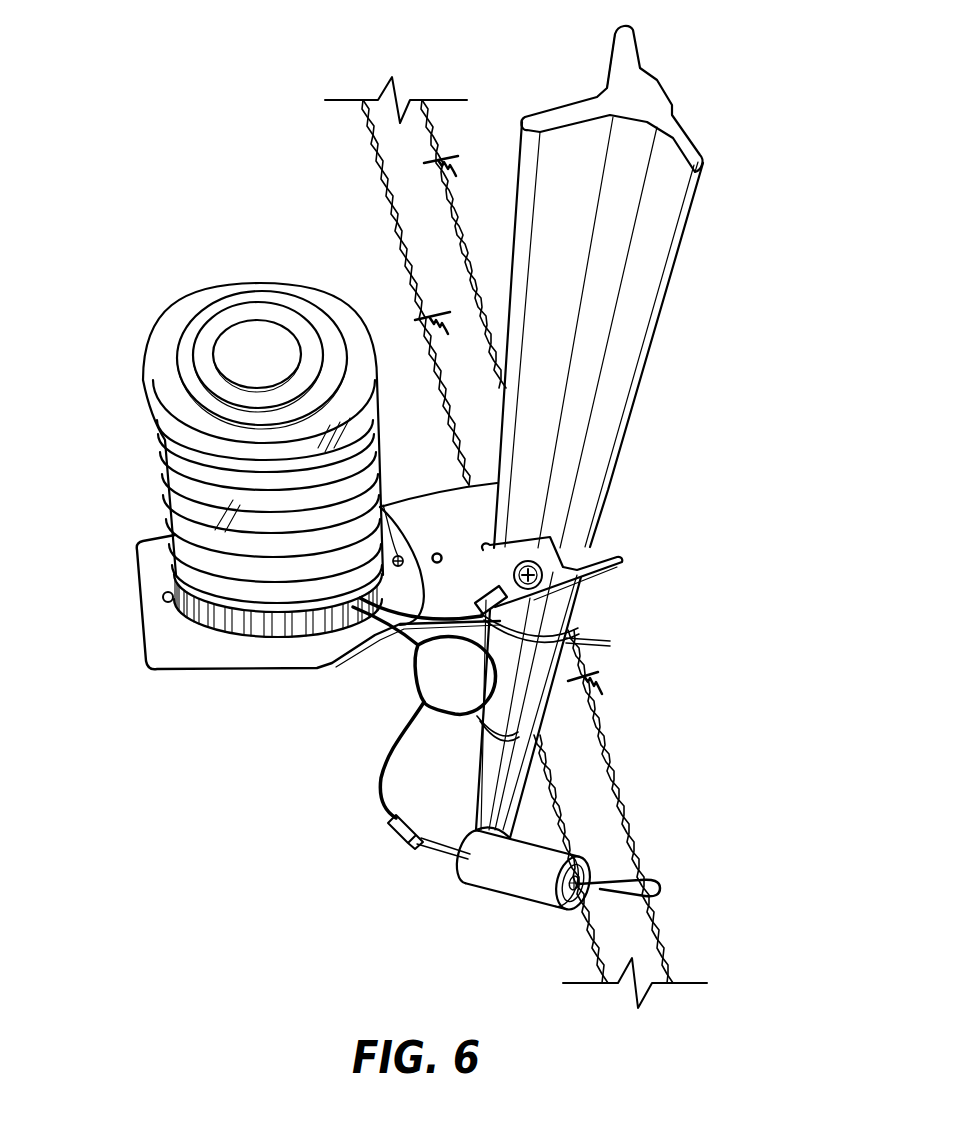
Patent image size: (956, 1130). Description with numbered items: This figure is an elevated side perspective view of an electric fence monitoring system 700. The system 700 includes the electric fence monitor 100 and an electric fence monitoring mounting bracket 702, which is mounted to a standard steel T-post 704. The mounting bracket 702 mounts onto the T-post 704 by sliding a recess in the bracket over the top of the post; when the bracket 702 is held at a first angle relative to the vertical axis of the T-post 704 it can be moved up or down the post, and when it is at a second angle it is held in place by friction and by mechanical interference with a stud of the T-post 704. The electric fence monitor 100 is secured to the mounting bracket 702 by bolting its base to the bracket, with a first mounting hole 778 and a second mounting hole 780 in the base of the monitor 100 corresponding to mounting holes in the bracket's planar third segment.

The electric fence monitoring system 700 is at (112, 220).
The electric fence monitor 100 is at (110, 410).
The mounting bracket 702 is at (145, 640).
The T-post 704 is at (720, 187).
The first mounting hole 778 is at (163, 595).
The second mounting hole 780 is at (420, 566).